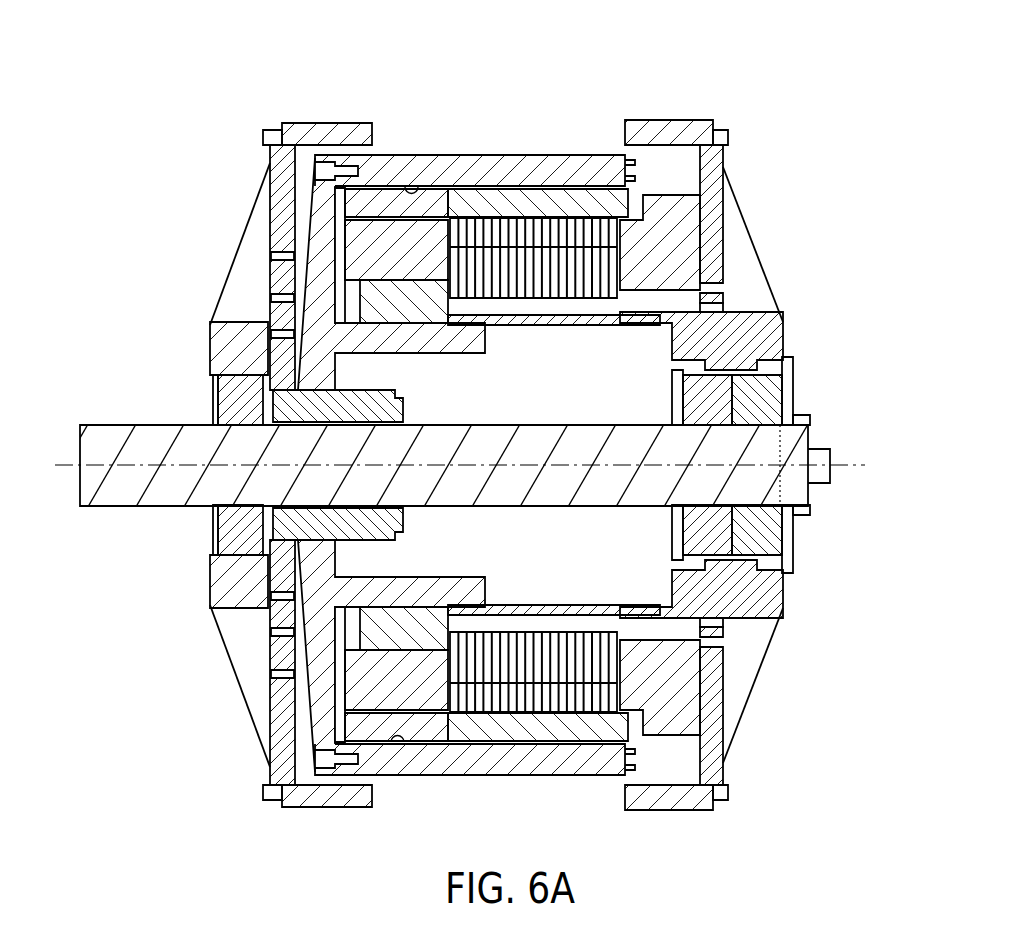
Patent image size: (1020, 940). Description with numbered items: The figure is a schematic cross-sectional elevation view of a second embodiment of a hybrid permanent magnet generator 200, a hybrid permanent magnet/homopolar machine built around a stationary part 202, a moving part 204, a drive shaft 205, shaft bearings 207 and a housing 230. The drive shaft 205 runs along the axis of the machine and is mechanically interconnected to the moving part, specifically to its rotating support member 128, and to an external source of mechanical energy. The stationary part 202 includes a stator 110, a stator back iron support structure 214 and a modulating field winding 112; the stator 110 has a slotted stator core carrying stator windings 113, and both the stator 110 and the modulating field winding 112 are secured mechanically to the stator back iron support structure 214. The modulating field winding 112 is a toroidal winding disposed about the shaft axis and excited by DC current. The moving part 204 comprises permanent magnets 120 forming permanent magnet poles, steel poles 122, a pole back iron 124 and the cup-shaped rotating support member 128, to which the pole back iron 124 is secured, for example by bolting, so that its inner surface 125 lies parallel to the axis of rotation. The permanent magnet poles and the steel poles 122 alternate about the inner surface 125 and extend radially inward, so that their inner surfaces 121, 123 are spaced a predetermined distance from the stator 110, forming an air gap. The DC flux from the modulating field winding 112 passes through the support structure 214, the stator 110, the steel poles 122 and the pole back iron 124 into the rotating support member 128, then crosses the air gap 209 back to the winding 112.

The hybrid permanent magnet generator 200 is at (778, 47).
The drive shaft 205 is at (85, 427).
The shaft bearings 207 is at (226, 401).
The rotating support member 128 is at (325, 205).
The moving part 204 is at (311, 218).
The air gap 209 is at (397, 359).
The pole back iron 124 is at (468, 172).
The permanent magnets 120 is at (560, 212).
The steel poles 122 is at (546, 738).
The inner surface of the pole back iron 125 is at (406, 188).
The inner surface of the permanent magnet poles 121 is at (450, 222).
The inner surface of the steel poles 123 is at (460, 714).
The modulating field winding 112 is at (380, 302).
The stator 110 is at (610, 263).
The stator windings 113 is at (675, 712).
The stationary part 202 is at (653, 188).
The stator back iron support structure 214 is at (714, 299).
The housing 230 is at (822, 334).